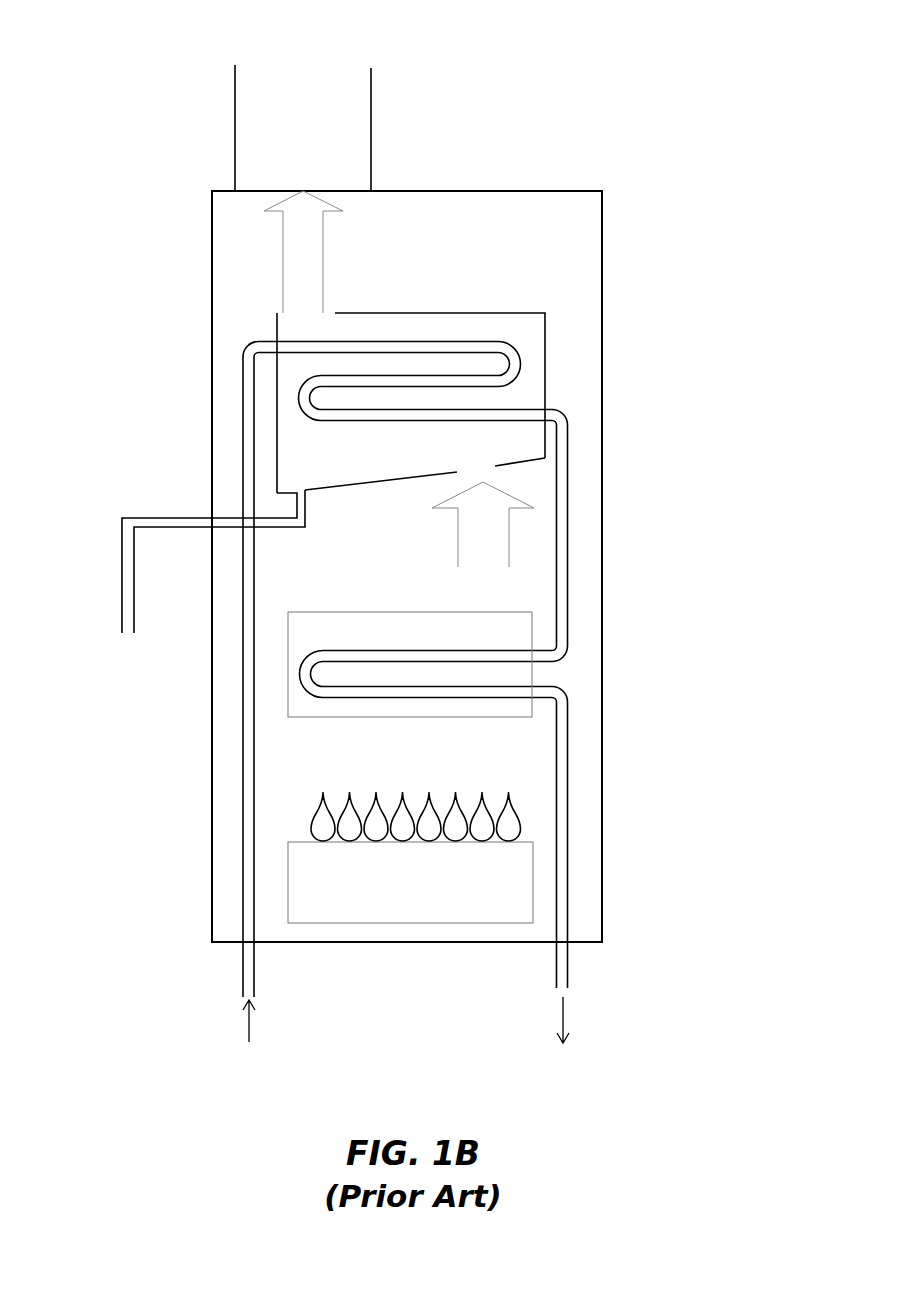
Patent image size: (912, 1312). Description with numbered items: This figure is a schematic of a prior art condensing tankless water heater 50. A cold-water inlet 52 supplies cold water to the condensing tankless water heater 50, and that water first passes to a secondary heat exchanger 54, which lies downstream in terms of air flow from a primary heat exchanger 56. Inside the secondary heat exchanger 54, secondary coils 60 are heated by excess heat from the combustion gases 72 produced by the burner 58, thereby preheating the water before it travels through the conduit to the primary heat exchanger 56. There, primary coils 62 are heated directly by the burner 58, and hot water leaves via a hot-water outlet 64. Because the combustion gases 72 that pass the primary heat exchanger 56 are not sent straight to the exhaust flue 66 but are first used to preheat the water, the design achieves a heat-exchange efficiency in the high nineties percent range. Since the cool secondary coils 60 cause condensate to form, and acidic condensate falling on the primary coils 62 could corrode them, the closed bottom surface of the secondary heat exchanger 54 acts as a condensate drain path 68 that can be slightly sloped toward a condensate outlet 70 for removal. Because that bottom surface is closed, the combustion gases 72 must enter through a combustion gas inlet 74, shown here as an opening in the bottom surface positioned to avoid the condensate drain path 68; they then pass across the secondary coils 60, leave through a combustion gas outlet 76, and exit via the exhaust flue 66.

The condensing tankless water heater 50 is at (656, 183).
The cold-water inlet 52 is at (243, 978).
The secondary heat exchanger 54 is at (545, 335).
The primary heat exchanger 56 is at (532, 619).
The burner 58 is at (410, 857).
The secondary coils 60 is at (300, 398).
The primary coils 62 is at (297, 668).
The hot-water outlet 64 is at (568, 962).
The exhaust flue 66 is at (235, 127).
The condensate drain path 68 is at (393, 482).
The condensate outlet 70 is at (122, 580).
The combustion gases 72 is at (507, 547).
The combustion gas inlet 74 is at (495, 466).
The combustion gas outlet 76 is at (277, 313).